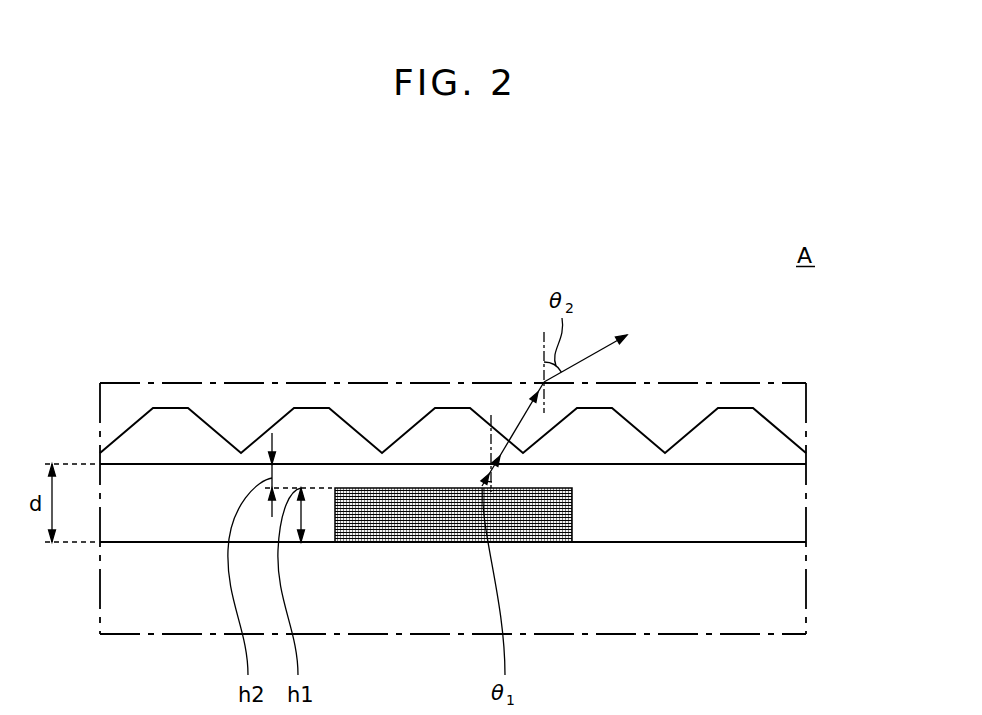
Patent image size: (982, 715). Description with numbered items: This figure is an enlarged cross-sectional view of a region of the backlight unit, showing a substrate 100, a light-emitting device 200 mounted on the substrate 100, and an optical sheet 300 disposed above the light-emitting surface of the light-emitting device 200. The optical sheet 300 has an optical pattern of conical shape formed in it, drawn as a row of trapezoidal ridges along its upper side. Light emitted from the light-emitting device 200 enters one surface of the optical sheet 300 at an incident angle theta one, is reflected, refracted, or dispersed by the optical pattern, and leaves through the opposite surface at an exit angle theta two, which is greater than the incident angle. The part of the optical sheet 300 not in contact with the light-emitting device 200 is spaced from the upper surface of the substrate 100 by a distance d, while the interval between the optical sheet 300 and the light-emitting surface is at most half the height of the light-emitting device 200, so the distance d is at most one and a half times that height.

The substrate 100 is at (798, 590).
The light-emitting device 200 is at (381, 522).
The optical sheet 300 is at (798, 423).